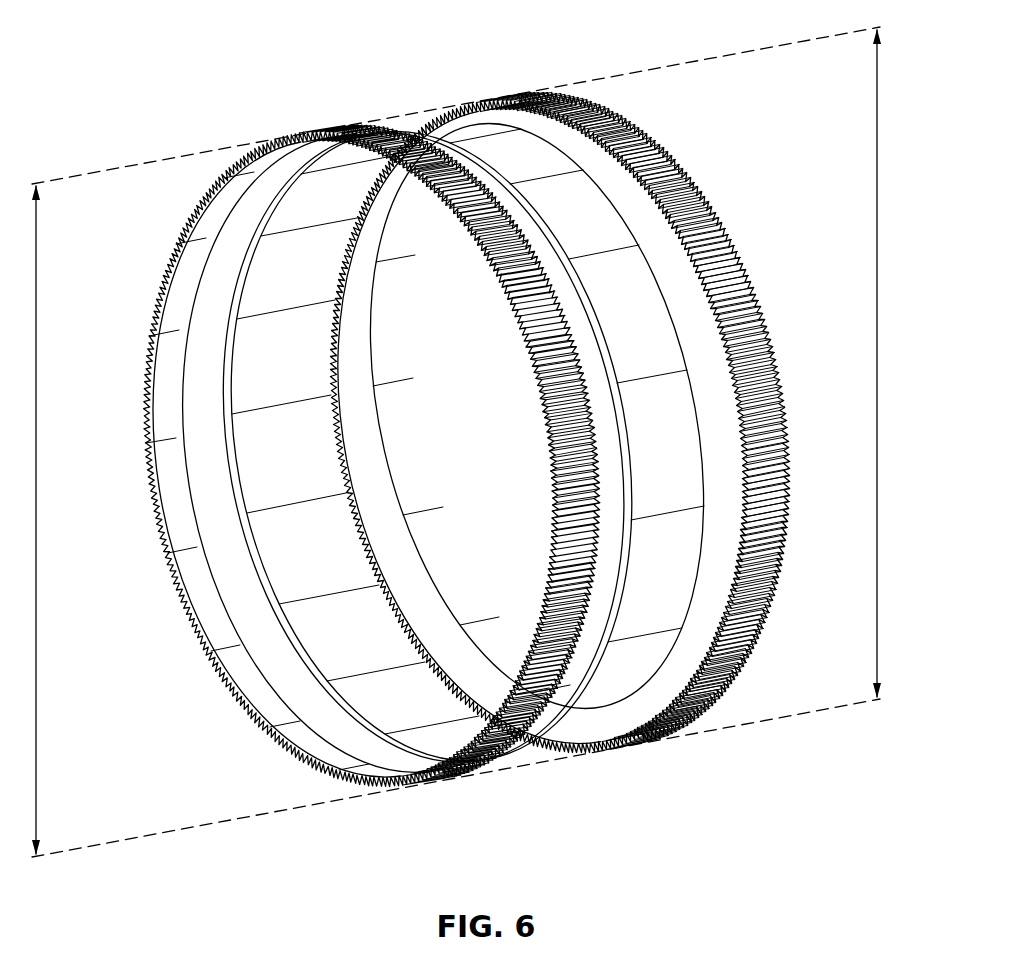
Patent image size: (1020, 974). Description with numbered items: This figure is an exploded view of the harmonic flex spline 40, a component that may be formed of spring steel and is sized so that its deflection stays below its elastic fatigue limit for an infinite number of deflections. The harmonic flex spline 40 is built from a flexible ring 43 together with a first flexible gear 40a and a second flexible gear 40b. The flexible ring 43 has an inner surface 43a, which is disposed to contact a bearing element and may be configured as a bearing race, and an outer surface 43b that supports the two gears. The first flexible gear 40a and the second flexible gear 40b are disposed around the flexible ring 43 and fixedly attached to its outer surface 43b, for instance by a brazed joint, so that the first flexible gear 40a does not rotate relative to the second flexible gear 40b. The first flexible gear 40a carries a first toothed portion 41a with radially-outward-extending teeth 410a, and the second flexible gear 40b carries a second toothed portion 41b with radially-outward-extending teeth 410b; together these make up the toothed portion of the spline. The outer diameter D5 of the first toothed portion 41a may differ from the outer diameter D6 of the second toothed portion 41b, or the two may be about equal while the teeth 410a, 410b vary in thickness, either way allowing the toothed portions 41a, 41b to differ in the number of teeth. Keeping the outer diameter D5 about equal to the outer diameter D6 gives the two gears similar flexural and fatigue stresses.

The harmonic flex spline 40 is at (183, 51).
The first flexible gear 40a is at (546, 90).
The second flexible gear 40b is at (374, 132).
The first toothed portion 41a is at (767, 308).
The second toothed portion 41b is at (505, 211).
The radially-outward-extending teeth 410a is at (748, 636).
The radially-outward-extending teeth 410b is at (266, 733).
The flexible ring 43 is at (680, 513).
The inner surface 43a is at (260, 518).
The outer surface 43b is at (608, 311).
The outer diameter D5 is at (877, 302).
The outer diameter D6 is at (38, 642).